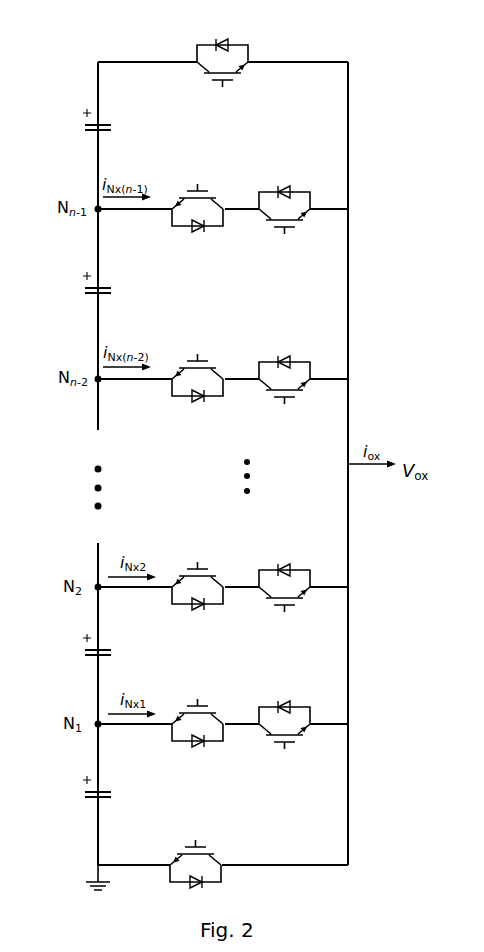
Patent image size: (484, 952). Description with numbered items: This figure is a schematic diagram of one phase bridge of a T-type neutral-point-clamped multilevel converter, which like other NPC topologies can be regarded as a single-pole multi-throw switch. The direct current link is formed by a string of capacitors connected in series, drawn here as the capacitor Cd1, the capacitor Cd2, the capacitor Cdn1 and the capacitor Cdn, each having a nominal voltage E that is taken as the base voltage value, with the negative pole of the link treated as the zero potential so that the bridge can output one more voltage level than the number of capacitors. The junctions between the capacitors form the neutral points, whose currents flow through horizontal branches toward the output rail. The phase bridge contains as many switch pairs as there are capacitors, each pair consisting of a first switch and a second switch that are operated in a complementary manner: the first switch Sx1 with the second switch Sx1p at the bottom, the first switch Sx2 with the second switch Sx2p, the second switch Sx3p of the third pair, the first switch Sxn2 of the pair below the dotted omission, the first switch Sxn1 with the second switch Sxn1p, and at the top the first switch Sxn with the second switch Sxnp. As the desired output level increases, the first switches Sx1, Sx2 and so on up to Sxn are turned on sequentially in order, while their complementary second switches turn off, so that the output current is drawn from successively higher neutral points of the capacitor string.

The first switch Sxn is at (213, 71).
The second switch Sxnp is at (197, 192).
The first switch Sxn1 is at (284, 222).
The second switch Sxn1p is at (197, 364).
The first switch Sxn2 is at (289, 395).
The second switch Sx3p is at (197, 575).
The first switch Sx2 is at (284, 604).
The second switch Sx2p is at (197, 710).
The first switch Sx1 is at (284, 740).
The second switch Sx1p is at (195, 851).
The DC-link capacitor Cdn is at (86, 126).
The DC-link capacitor Cdn1 is at (81, 294).
The DC-link capacitor Cd2 is at (86, 650).
The DC-link capacitor Cd1 is at (86, 792).